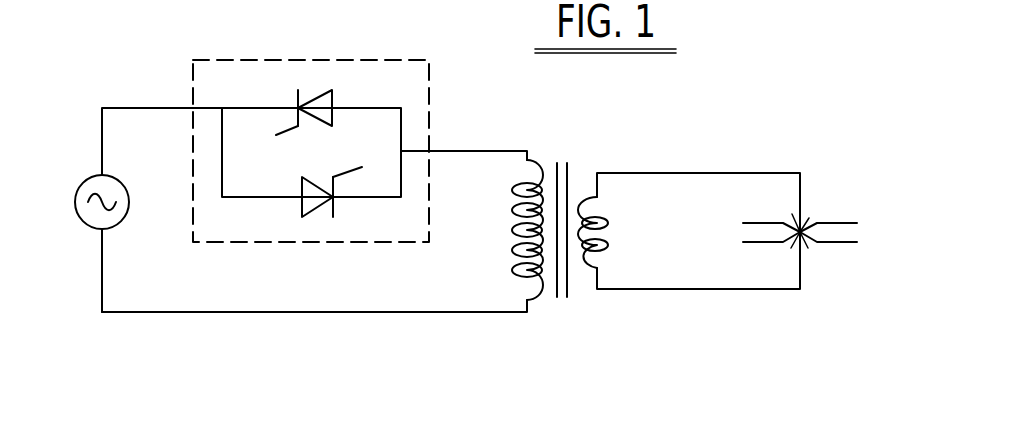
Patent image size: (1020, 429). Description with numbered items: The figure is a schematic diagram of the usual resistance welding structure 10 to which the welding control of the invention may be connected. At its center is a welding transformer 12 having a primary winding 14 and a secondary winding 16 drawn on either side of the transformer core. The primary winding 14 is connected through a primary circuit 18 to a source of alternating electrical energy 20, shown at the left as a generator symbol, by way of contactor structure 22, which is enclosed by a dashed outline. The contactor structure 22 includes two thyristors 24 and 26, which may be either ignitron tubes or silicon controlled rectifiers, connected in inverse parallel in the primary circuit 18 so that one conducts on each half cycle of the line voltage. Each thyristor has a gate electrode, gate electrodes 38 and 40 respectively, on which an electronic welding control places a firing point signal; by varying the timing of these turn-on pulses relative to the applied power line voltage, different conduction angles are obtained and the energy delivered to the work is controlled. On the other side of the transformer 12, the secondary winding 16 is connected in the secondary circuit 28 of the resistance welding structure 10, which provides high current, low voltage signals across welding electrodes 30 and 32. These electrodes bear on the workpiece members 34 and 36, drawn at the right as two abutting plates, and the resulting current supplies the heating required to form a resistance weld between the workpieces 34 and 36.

The resistance welding structure 10 is at (523, 110).
The welding transformer 12 is at (555, 157).
The primary winding 14 is at (517, 228).
The secondary winding 16 is at (607, 223).
The primary circuit 18 is at (270, 313).
The source of alternating electrical energy 20 is at (89, 175).
The contactor structure 22 is at (302, 58).
The thyristor 24 is at (332, 90).
The thyristor 26 is at (336, 205).
The secondary circuit 28 is at (681, 173).
The welding electrode 30 is at (806, 222).
The welding electrode 32 is at (807, 241).
The workpiece member 34 is at (767, 243).
The workpiece member 36 is at (846, 223).
The gate electrode 38 is at (287, 131).
The gate electrode 40 is at (343, 173).